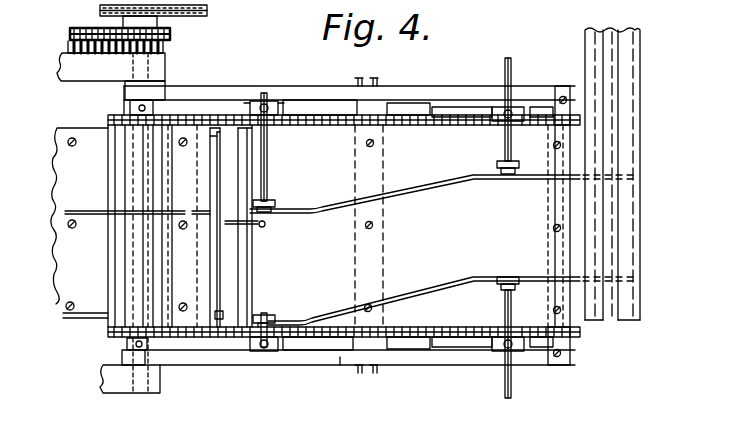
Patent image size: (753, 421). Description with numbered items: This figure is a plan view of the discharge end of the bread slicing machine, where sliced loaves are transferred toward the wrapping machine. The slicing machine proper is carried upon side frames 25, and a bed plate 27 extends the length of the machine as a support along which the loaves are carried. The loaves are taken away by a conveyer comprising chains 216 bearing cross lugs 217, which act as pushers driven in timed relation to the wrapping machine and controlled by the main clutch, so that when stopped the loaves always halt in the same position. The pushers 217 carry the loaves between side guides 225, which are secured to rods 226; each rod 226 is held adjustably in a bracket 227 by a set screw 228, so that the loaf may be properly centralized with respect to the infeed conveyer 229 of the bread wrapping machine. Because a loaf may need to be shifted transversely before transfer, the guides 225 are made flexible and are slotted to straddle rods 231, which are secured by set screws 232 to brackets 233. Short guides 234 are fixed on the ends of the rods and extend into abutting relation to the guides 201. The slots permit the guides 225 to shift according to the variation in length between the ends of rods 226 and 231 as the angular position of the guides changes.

The side frames 25 is at (228, 92).
The bed plate 27 is at (82, 262).
The guides 201 is at (72, 211).
The chains 216 is at (238, 335).
The cross lugs 217 is at (238, 265).
The side guides 225 is at (418, 188).
The rods 226 is at (512, 60).
The bracket 227 is at (500, 342).
The set screw 228 is at (516, 105).
The infeed conveyer 229 is at (655, 249).
The rods 231 is at (268, 182).
The set screws 232 is at (280, 104).
The brackets 233 is at (256, 97).
The short guides 234 is at (199, 316).